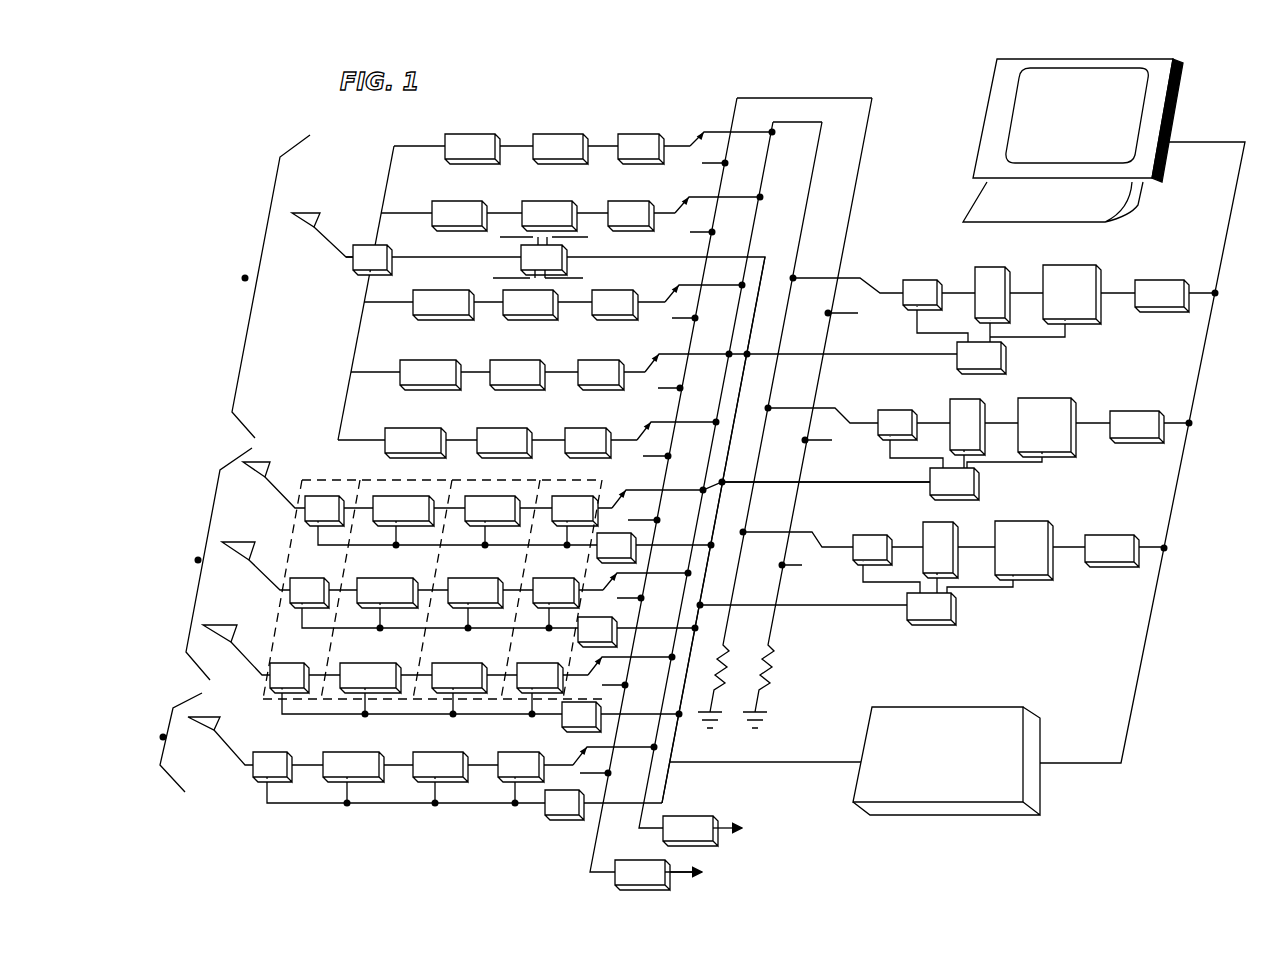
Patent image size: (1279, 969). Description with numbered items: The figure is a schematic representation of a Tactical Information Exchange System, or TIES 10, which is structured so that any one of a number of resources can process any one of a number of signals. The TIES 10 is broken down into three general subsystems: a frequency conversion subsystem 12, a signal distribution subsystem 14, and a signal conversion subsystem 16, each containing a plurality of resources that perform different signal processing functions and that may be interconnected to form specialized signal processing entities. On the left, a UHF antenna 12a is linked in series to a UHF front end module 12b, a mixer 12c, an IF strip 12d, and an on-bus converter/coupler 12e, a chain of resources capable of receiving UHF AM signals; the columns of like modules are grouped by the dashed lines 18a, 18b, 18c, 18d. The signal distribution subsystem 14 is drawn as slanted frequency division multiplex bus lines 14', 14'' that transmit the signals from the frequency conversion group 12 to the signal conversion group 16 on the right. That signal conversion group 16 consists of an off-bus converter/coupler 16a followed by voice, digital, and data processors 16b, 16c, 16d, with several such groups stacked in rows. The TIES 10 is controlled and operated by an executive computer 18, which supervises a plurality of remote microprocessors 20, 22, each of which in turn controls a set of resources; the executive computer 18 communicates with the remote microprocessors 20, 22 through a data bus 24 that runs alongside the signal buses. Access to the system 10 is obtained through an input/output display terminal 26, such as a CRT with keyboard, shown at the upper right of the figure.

The Tactical Information Exchange System (TIES) 10 is at (906, 62).
The frequency conversion subsystem 12 is at (192, 526).
The UHF antenna 12a is at (262, 462).
The UHF front end module 12b is at (324, 496).
The mixer 12c is at (402, 496).
The IF strip 12d is at (490, 496).
The on-bus converter/coupler 12e is at (572, 496).
The signal distribution subsystem 14 is at (785, 413).
The inner bus line 14' is at (754, 459).
The outer bus line 14'' is at (731, 481).
The signal conversion subsystem 16 is at (1192, 502).
The off-bus converter/coupler 16a is at (917, 280).
The voice processor 16b is at (992, 267).
The digital processor 16c is at (1085, 265).
The data processor 16d is at (1165, 280).
The executive computer 18 is at (1030, 707).
The filter column 18a is at (290, 722).
The amplifier column 18b is at (348, 722).
The filter column 18c is at (448, 722).
The switch column 18d is at (534, 722).
The remote microprocessor 20 is at (596, 552).
The remote microprocessor 22 is at (998, 369).
The data bus 24 is at (741, 380).
The input/output display terminal 26 is at (1180, 82).